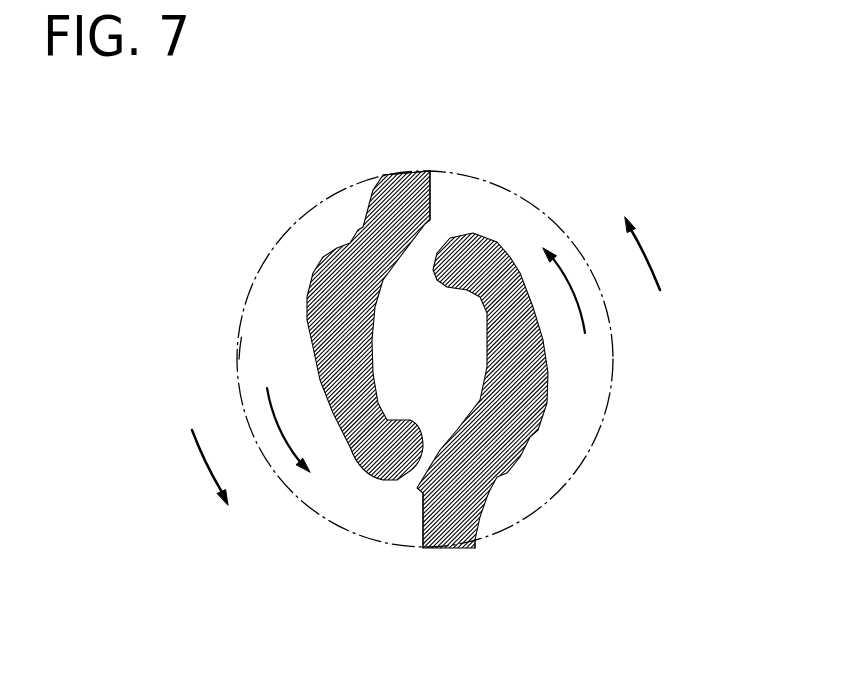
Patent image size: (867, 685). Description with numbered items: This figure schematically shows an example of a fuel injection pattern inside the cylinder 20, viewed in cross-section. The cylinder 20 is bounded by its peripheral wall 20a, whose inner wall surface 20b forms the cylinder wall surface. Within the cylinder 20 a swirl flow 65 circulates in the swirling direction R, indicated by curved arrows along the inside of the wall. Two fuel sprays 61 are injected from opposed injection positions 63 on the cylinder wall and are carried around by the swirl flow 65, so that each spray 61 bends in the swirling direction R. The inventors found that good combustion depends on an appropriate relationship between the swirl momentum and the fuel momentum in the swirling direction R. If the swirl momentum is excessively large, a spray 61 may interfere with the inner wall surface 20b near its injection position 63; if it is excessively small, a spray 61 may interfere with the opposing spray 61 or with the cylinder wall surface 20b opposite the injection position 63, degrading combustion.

The cylinder 20 is at (507, 359).
The peripheral wall 20a is at (611, 417).
The inner wall surface 20b is at (242, 330).
The fuel spray 61 is at (316, 292).
The injection position 63 is at (411, 173).
The swirl flow 65 is at (581, 307).
The swirling direction R is at (654, 261).